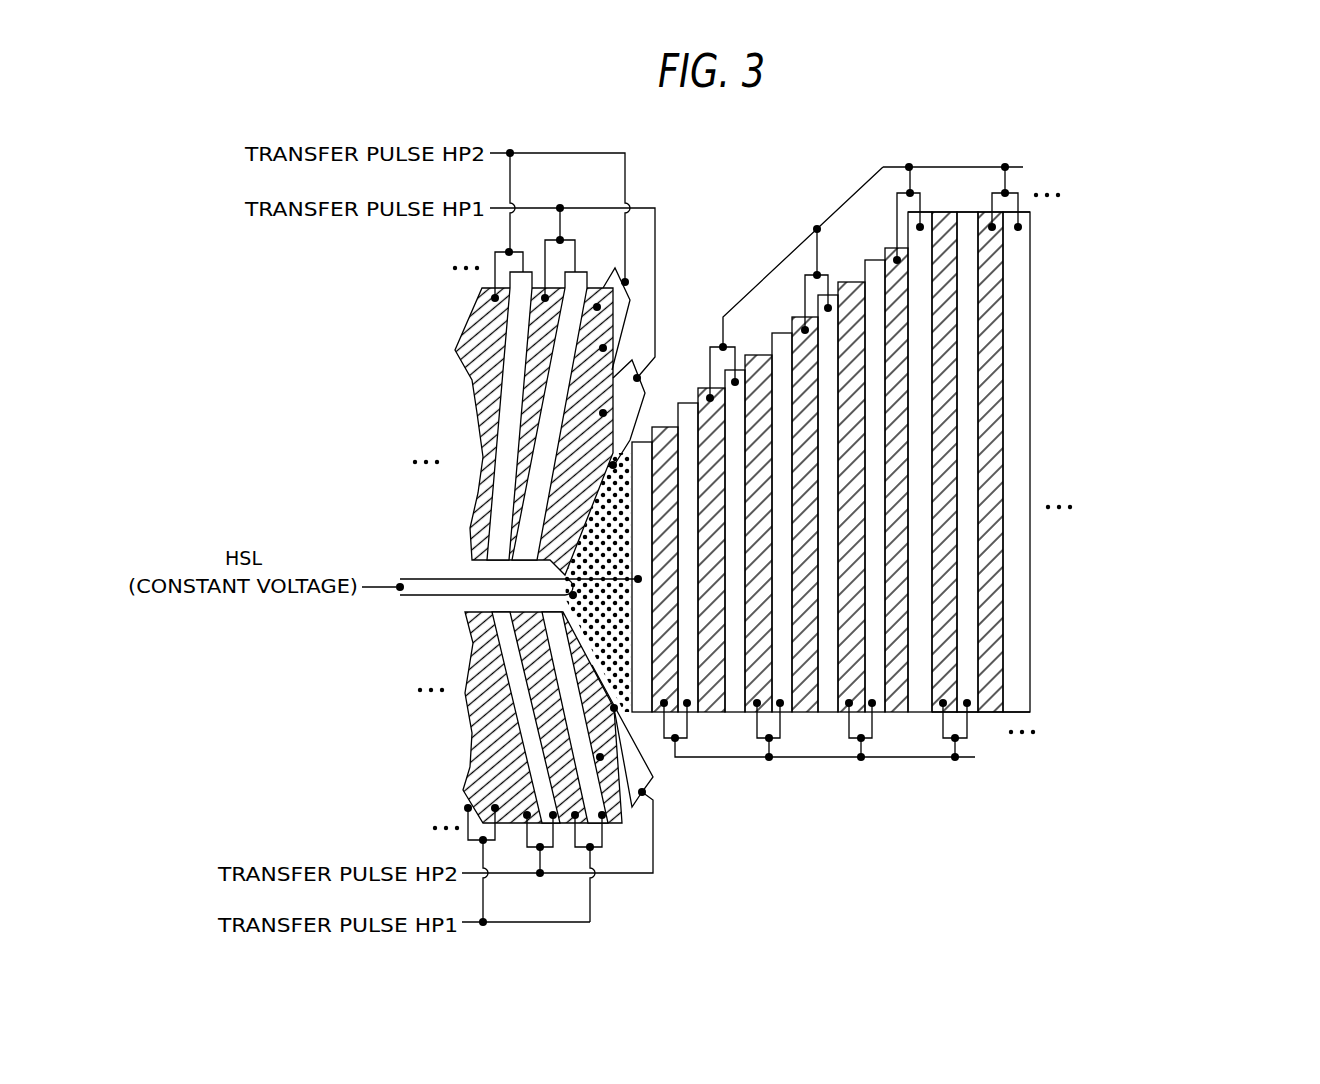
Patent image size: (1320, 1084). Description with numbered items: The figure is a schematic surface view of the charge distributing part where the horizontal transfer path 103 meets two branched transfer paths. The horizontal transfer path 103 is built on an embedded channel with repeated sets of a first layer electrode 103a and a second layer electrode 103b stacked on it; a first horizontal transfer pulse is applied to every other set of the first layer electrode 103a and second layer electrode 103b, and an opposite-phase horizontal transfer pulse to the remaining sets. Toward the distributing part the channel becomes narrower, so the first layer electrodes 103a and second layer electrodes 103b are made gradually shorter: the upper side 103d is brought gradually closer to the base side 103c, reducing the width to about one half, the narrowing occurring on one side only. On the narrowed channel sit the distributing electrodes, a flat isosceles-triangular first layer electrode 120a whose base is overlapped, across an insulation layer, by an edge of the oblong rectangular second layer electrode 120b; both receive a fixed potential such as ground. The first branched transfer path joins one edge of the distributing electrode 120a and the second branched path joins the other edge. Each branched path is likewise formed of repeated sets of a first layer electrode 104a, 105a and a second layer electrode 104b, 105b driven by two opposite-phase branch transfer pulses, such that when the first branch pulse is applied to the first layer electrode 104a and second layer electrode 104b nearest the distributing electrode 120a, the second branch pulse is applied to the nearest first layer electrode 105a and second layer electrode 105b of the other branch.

The horizontal transfer path 103 is at (958, 462).
The first layer electrode 103a is at (948, 328).
The second layer electrode 103b is at (1017, 373).
The base side 103c is at (992, 716).
The upper side 103d is at (943, 214).
The first layer electrode 104a is at (550, 517).
The second layer electrode 104b is at (567, 543).
The first layer electrode 105a is at (527, 629).
The second layer electrode 105b is at (580, 647).
The first layer electrode 120a is at (620, 683).
The second layer electrode 120b is at (637, 652).